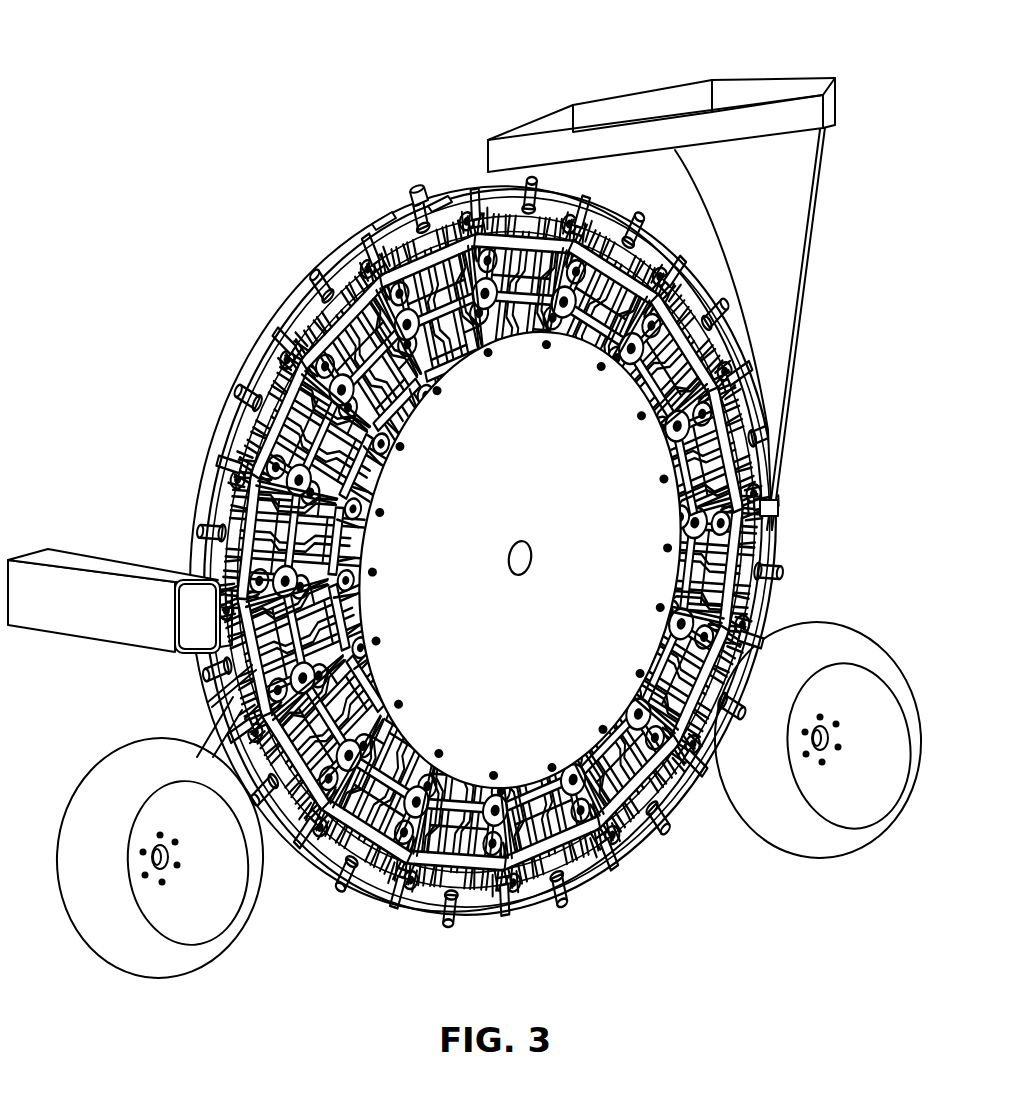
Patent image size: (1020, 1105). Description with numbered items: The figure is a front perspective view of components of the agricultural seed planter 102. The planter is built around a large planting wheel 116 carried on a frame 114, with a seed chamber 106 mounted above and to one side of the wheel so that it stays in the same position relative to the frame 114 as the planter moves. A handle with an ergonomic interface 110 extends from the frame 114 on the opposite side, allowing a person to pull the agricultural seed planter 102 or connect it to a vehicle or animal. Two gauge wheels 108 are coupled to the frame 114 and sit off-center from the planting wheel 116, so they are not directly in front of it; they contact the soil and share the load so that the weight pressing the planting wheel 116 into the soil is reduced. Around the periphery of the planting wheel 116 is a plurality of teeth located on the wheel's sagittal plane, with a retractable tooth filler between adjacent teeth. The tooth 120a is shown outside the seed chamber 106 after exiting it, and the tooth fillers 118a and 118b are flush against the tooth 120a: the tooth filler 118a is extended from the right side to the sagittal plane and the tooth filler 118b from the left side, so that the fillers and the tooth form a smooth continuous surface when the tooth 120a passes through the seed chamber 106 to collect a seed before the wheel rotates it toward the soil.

The agricultural seed planter 102 is at (218, 54).
The seed chamber 106 is at (780, 258).
The gauge wheels 108 is at (118, 773).
The ergonomic interface 110 is at (88, 565).
The frame 114 is at (222, 712).
The planting wheel 116 is at (218, 254).
The tooth filler 118a is at (388, 212).
The tooth filler 118b is at (440, 200).
The tooth 120a is at (420, 192).